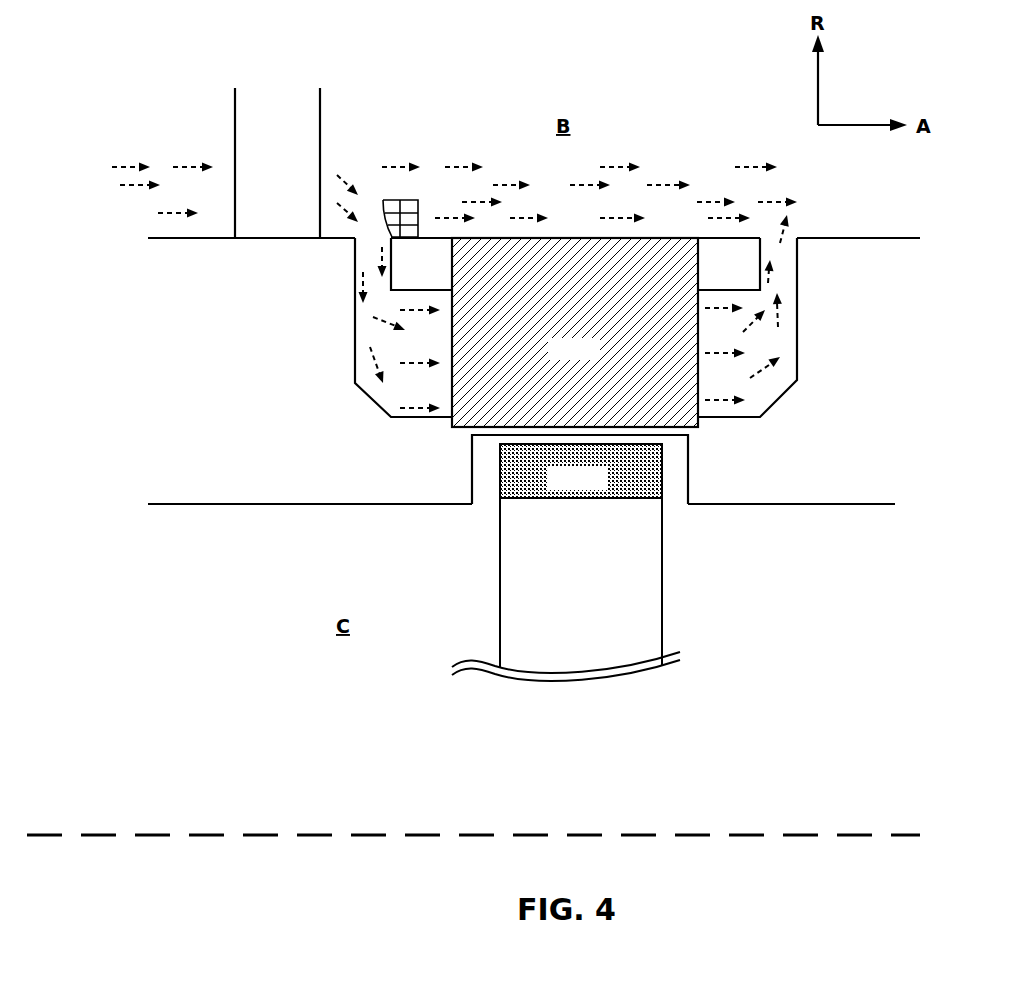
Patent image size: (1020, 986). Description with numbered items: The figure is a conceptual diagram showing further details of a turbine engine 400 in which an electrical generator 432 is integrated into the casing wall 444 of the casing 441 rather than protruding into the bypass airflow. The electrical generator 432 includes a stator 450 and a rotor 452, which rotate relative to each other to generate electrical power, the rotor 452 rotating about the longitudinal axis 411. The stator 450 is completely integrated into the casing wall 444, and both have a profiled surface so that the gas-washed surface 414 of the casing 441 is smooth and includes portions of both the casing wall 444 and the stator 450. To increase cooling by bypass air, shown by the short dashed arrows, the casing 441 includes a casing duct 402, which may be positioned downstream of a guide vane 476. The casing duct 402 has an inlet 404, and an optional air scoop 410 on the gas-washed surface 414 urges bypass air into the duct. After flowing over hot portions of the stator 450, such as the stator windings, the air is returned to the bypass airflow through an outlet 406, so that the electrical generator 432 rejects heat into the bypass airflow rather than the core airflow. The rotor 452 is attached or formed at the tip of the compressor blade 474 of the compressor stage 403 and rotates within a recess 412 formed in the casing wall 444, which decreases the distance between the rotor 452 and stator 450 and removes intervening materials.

The turbine engine 400 is at (113, 134).
The casing duct 402 is at (383, 400).
The compressor stage 403 is at (728, 623).
The inlet 404 is at (371, 232).
The outlet 406 is at (806, 240).
The air scoop 410 is at (420, 236).
The longitudinal axis 411 is at (208, 834).
The recess 412 is at (489, 482).
The gas-washed surface 414 is at (175, 237).
The electrical generator 432 is at (730, 460).
The casing 441 is at (108, 466).
The casing wall 444 is at (354, 327).
The stator 450 is at (575, 332).
The rotor 452 is at (581, 471).
The compressor blade 474 is at (566, 589).
The guide vane 476 is at (277, 163).